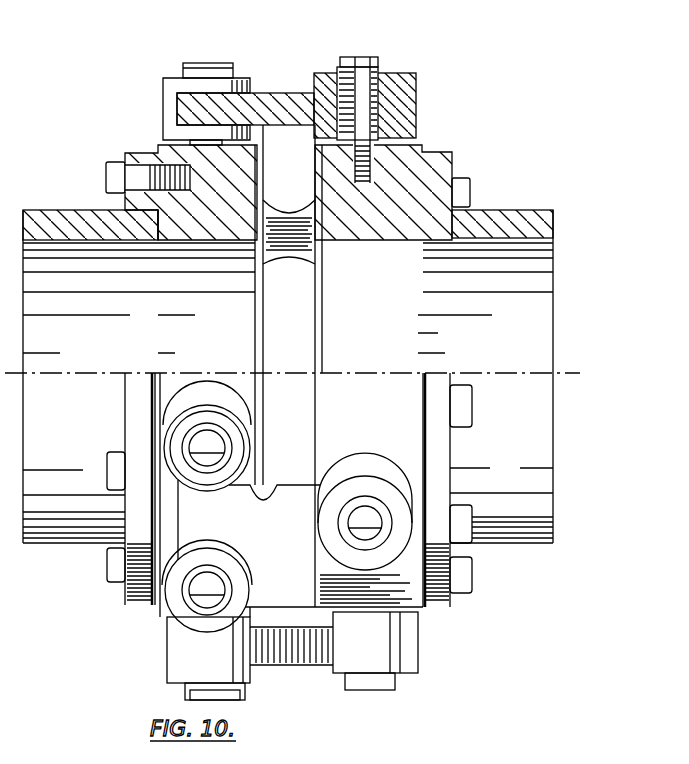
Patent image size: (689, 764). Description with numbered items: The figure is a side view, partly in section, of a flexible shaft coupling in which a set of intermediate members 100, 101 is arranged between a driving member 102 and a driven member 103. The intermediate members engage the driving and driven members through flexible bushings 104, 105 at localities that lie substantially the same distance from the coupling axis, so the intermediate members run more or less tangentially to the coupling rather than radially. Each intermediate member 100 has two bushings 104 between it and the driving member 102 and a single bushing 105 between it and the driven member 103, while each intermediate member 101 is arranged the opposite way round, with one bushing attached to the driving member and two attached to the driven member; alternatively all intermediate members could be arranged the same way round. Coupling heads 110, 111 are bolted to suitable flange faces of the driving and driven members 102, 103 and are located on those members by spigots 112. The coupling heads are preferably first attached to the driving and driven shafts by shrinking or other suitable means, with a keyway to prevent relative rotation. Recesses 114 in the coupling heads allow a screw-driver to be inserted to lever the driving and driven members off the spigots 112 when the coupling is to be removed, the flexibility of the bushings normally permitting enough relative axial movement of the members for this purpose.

The intermediate member 100 is at (286, 93).
The intermediate member 101 is at (299, 660).
The driving member 102 is at (168, 151).
The driven member 103 is at (402, 157).
The bushing 104 is at (178, 84).
The bushing 105 is at (398, 77).
The coupling head 110 is at (78, 217).
The coupling head 111 is at (508, 217).
The spigot 112 is at (163, 222).
The recess 114 is at (156, 617).